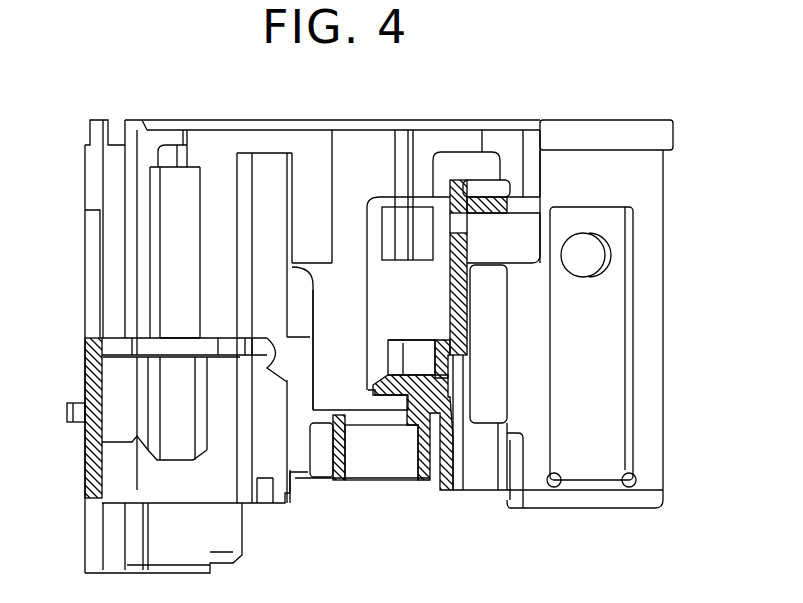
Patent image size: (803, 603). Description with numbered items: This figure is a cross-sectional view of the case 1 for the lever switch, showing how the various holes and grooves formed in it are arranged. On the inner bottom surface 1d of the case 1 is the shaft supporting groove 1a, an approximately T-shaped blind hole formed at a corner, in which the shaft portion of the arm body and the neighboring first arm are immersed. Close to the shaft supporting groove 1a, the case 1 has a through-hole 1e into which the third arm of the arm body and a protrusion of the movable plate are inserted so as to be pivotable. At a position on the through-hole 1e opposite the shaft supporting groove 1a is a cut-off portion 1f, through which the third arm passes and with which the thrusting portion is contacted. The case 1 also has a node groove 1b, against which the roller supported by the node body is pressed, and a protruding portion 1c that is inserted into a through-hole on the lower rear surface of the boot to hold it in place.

The case 1 is at (587, 118).
The shaft supporting groove 1a is at (357, 387).
The node groove 1b is at (437, 233).
The protruding portion 1c is at (98, 125).
The inner bottom surface 1d is at (413, 333).
The through-hole 1e is at (410, 357).
The cut-off portion 1f is at (280, 357).